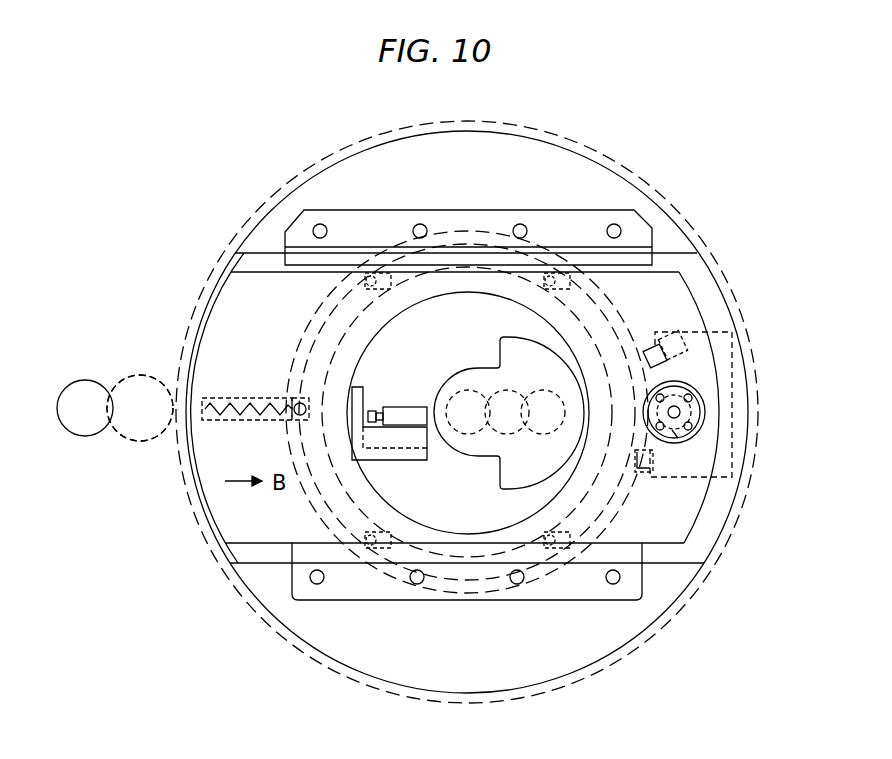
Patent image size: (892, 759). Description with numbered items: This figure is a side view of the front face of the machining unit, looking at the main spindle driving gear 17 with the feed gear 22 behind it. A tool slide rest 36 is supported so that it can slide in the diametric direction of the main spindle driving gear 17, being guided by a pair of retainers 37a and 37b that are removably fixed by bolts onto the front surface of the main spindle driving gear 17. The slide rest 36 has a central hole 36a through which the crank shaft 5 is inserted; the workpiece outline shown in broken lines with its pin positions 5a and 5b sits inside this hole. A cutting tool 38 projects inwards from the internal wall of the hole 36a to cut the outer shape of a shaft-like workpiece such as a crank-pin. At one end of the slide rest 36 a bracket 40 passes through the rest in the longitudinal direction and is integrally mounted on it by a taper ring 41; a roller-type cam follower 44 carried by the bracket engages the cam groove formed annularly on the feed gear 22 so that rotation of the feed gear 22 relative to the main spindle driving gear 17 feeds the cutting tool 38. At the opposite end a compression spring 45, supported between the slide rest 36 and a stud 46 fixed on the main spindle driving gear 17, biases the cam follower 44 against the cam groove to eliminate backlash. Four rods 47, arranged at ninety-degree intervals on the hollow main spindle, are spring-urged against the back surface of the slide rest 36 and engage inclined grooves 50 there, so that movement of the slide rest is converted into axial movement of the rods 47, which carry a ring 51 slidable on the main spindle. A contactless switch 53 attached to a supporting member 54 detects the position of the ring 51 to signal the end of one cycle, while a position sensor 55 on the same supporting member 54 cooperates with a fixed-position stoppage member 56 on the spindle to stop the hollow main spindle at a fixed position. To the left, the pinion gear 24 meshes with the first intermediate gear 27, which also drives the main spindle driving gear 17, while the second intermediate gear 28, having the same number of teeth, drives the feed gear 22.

The main spindle driving gear 17 is at (600, 172).
The feed gear 22 is at (467, 412).
The tool slide rest 36 is at (232, 302).
The hole 36a is at (380, 330).
The retainer 37a is at (400, 216).
The retainer 37b is at (374, 600).
The rods 47 is at (372, 276).
The inclined grooves 50 is at (555, 278).
The ring 51 is at (604, 296).
The crank shaft 5 is at (488, 368).
The workpiece hole 5a is at (512, 432).
The workpiece hole 5b is at (546, 392).
The cutting tool 38 is at (427, 400).
The compression spring 45 is at (228, 398).
The stud 46 is at (298, 404).
The bracket 40 is at (688, 414).
The taper ring 41 is at (704, 404).
The roller-type cam follower 44 is at (690, 436).
The contactless switch 53 is at (653, 348).
The supporting member 54 is at (688, 478).
The position sensor 55 is at (642, 474).
The fixed-position stoppage member 56 is at (635, 476).
The pinion gear 24 is at (86, 380).
The first intermediate gear 27 is at (140, 375).
The second intermediate gear 28 is at (140, 408).